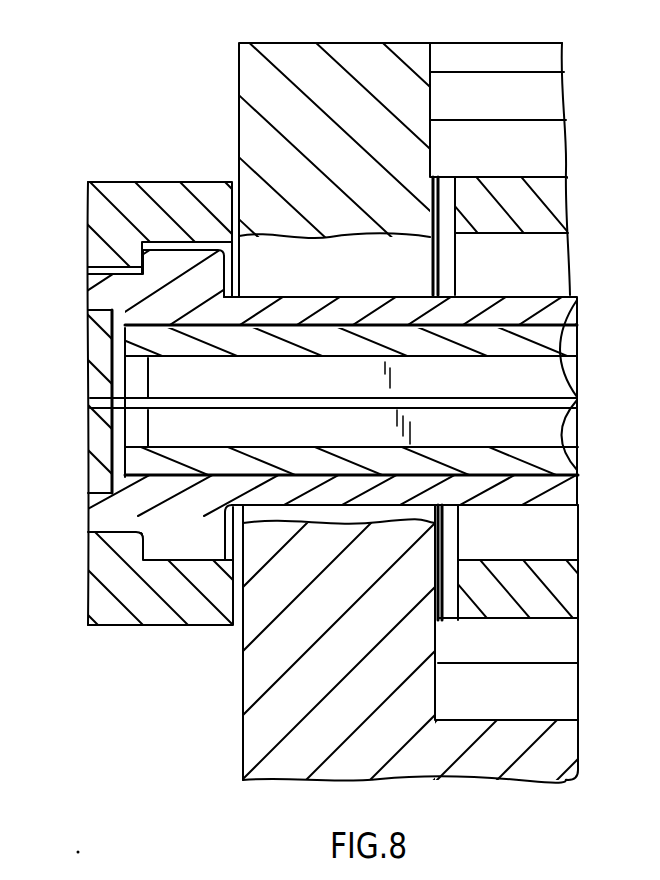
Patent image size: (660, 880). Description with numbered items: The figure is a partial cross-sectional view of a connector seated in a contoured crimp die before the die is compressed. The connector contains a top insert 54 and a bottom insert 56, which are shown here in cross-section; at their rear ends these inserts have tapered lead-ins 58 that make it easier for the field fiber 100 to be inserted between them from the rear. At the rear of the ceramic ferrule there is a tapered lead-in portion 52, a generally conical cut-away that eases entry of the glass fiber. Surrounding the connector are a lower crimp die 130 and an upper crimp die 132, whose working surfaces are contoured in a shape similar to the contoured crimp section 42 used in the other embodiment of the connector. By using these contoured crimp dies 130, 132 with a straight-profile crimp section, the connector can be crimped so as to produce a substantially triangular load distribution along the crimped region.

The contoured crimp section 42 is at (328, 507).
The tapered lead-in portion 52 is at (102, 438).
The top insert 54 is at (180, 370).
The bottom insert 56 is at (498, 460).
The tapered lead-ins 58 is at (566, 322).
The field fiber 100 is at (168, 398).
The lower crimp die 130 is at (242, 696).
The upper crimp die 132 is at (238, 140).